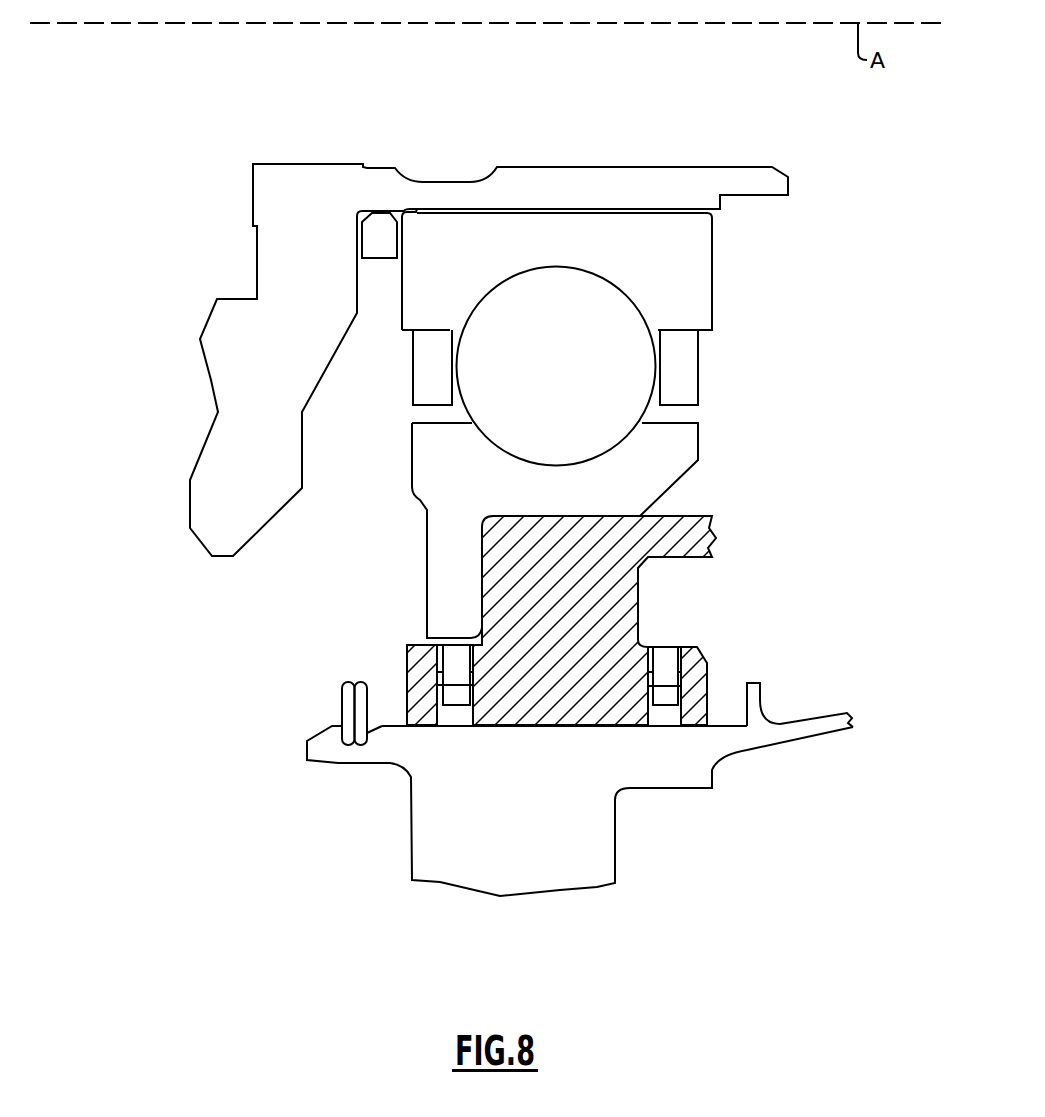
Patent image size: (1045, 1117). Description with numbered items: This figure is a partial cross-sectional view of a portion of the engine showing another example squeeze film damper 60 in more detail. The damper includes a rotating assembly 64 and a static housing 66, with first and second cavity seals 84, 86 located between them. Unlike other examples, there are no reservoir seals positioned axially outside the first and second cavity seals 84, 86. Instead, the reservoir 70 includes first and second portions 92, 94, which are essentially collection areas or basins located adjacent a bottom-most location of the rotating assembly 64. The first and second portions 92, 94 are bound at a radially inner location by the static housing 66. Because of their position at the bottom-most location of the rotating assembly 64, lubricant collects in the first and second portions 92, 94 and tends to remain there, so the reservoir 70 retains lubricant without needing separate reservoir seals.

The squeeze film damper 60 is at (180, 780).
The rotating assembly 64 is at (780, 372).
The static housing 66 is at (448, 820).
The reservoir 70 is at (364, 654).
The first cavity seal 84 is at (457, 722).
The second cavity seal 86 is at (663, 713).
The first portion 92 is at (382, 707).
The second portion 94 is at (723, 703).